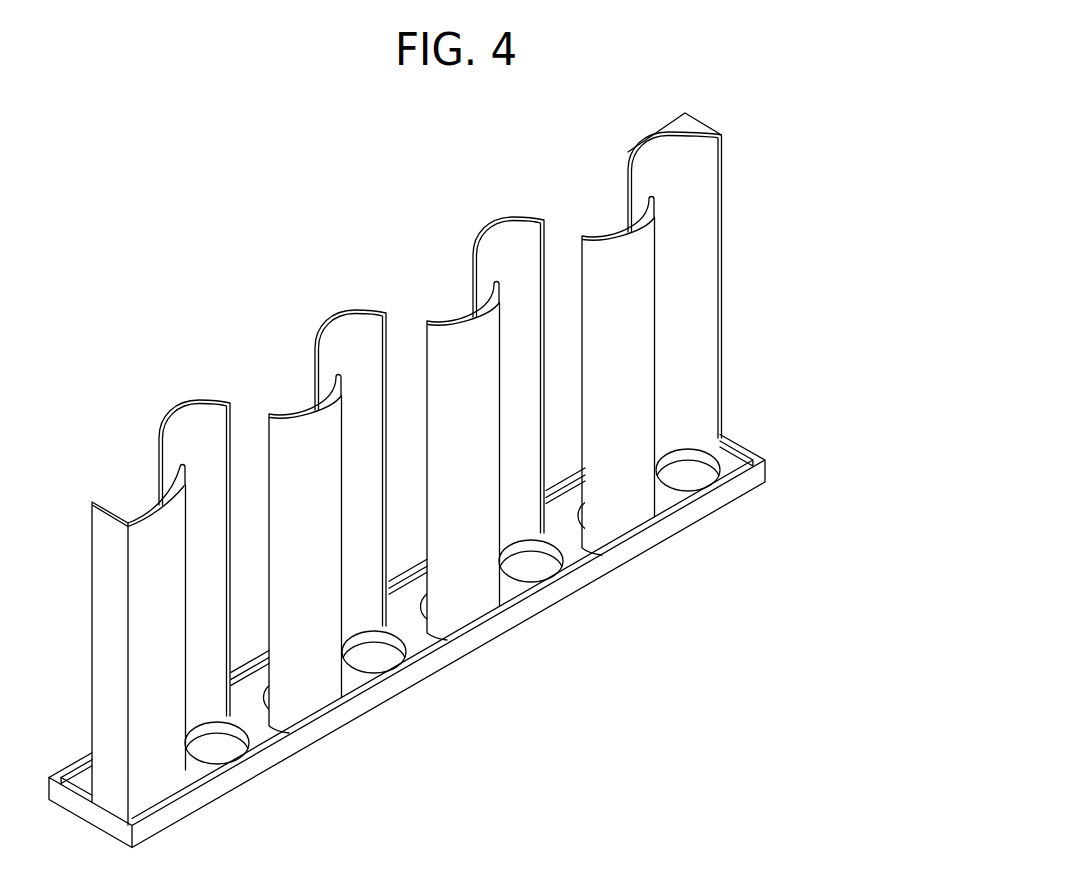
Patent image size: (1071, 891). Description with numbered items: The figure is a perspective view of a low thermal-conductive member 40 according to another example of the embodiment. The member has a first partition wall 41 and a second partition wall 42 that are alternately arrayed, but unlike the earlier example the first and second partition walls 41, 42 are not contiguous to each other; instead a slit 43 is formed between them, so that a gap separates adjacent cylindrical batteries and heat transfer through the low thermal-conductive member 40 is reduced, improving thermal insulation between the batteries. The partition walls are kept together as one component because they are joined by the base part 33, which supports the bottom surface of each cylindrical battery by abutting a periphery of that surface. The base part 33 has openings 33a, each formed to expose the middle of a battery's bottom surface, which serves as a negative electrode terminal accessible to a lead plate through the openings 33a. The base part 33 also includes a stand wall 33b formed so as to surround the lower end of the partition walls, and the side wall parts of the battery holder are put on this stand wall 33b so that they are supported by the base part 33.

The low thermal-conductive member 40 is at (798, 168).
The base part 33 is at (423, 646).
The opening 33a is at (223, 737).
The stand wall 33b is at (320, 730).
The first partition wall 41 is at (292, 424).
The second partition wall 42 is at (343, 335).
The slit 43 is at (425, 363).